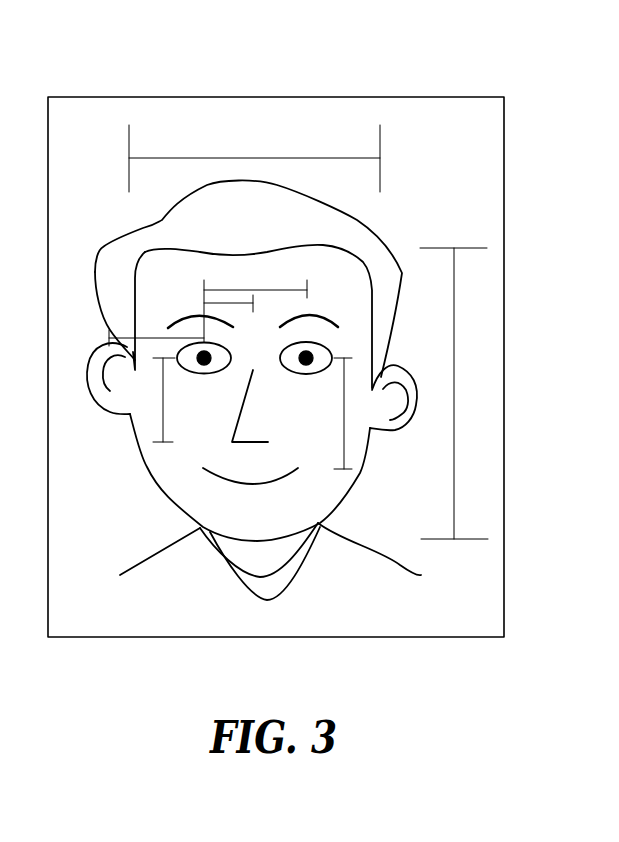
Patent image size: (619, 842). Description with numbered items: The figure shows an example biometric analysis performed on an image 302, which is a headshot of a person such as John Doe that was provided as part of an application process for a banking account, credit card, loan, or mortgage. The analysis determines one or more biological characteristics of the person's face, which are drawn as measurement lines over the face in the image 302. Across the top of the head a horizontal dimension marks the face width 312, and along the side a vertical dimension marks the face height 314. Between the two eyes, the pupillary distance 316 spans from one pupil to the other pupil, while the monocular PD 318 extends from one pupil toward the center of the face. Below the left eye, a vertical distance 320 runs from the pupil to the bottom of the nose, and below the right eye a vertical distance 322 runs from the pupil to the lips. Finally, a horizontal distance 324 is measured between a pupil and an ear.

The image 302 is at (276, 354).
The face width 312 is at (254, 158).
The face height 314 is at (456, 393).
The pupillary distance 316 is at (255, 305).
The monocular PD 318 is at (248, 300).
The vertical distance between a pupil and bottom of the nose 320 is at (179, 400).
The vertical distance between a pupil and the lips 322 is at (328, 413).
The horizontal distance between a pupil and an ear 324 is at (156, 331).